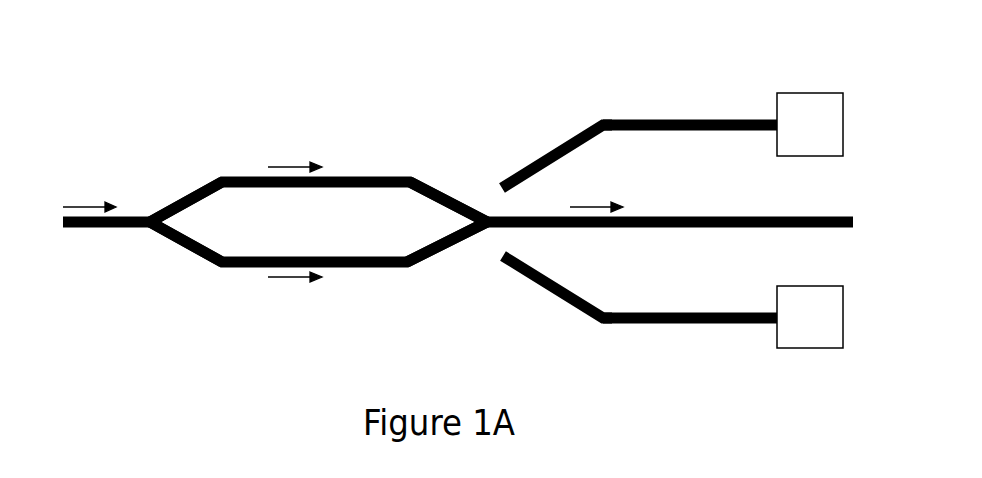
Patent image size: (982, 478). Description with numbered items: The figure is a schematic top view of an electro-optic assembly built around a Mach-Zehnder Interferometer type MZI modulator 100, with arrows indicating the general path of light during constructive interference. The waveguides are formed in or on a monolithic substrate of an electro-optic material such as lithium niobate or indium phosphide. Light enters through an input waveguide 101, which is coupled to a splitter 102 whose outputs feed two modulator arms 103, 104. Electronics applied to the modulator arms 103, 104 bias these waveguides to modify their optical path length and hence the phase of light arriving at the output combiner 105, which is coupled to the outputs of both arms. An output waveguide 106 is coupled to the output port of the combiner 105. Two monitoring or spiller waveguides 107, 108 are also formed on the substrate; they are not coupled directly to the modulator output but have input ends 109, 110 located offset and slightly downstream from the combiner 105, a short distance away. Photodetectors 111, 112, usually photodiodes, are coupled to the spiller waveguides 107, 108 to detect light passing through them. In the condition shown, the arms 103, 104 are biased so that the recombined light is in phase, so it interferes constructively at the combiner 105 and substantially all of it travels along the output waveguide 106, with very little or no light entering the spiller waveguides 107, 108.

The MZI modulator 100 is at (261, 133).
The input waveguide 101 is at (108, 228).
The splitter 102 is at (151, 229).
The modulator arm 103 is at (365, 176).
The modulator arm 104 is at (375, 268).
The output combiner 105 is at (490, 209).
The output waveguide 106 is at (727, 216).
The spiller waveguide 107 is at (727, 120).
The spiller waveguide 108 is at (727, 325).
The input end 109 is at (502, 183).
The input end 110 is at (503, 254).
The photodetector 111 is at (812, 93).
The photodetector 112 is at (810, 348).